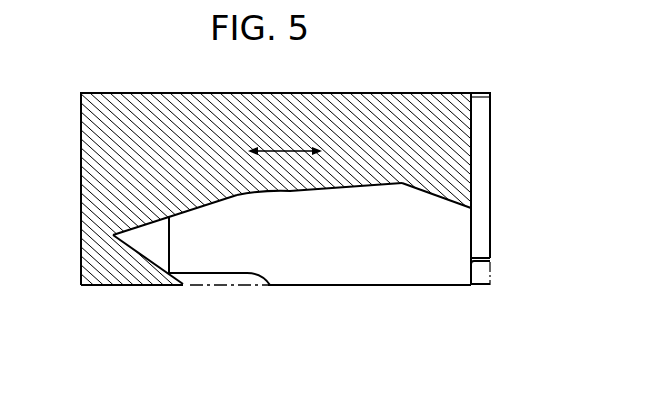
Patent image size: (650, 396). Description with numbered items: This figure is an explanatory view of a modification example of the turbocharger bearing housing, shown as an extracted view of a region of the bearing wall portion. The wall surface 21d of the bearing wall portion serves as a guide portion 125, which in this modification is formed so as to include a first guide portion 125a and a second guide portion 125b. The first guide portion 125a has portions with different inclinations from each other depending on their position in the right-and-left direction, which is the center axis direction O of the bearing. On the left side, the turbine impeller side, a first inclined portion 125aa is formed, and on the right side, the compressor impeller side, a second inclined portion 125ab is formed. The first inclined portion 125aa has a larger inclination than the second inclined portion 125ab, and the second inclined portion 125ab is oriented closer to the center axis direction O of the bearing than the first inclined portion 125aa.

The wall surface 21d is at (128, 241).
The guide portion 125 is at (147, 224).
The first guide portion 125a is at (272, 274).
The first inclined portion 125aa is at (200, 208).
The second inclined portion 125ab is at (333, 190).
The second guide portion 125b is at (402, 186).
The center axis direction O is at (283, 143).